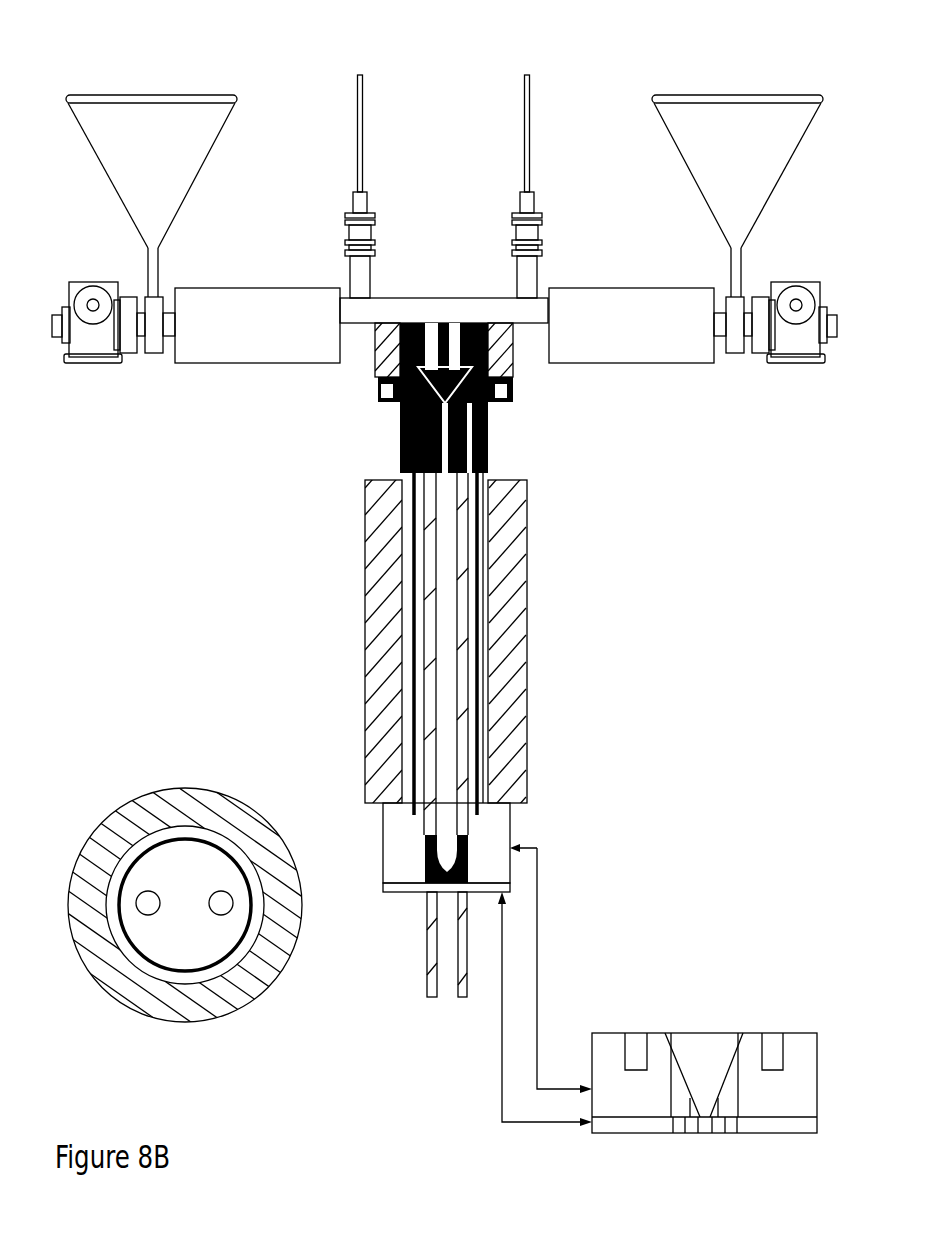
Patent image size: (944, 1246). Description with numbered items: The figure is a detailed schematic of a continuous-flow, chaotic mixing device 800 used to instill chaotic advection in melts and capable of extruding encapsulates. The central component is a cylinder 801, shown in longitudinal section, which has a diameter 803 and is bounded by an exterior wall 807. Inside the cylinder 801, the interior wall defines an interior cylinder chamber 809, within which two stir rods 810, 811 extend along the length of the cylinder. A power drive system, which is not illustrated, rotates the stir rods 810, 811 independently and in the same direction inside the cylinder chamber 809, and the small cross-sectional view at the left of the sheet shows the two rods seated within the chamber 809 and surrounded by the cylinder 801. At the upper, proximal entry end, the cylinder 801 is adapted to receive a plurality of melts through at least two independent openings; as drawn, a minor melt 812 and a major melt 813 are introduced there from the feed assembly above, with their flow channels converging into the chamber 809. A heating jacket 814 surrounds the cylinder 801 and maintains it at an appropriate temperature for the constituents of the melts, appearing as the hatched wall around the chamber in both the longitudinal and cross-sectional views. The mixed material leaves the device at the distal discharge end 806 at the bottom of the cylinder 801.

The continuous flow, chaotic mixing device 800 is at (445, 86).
The cylinder 801 is at (478, 522).
The diameter 803 is at (465, 1059).
The distal (discharge) end 806 is at (510, 887).
The exterior wall 807 is at (527, 765).
The interior cylinder chamber 809 is at (425, 519).
The stir rod 810 is at (365, 650).
The stir rod 811 is at (221, 908).
The minor melt 812 is at (375, 371).
The major melt 813 is at (497, 471).
The heating jacket 814 is at (512, 620).